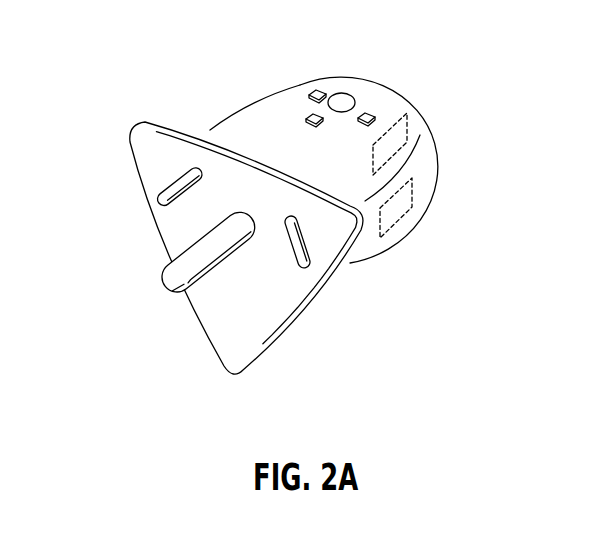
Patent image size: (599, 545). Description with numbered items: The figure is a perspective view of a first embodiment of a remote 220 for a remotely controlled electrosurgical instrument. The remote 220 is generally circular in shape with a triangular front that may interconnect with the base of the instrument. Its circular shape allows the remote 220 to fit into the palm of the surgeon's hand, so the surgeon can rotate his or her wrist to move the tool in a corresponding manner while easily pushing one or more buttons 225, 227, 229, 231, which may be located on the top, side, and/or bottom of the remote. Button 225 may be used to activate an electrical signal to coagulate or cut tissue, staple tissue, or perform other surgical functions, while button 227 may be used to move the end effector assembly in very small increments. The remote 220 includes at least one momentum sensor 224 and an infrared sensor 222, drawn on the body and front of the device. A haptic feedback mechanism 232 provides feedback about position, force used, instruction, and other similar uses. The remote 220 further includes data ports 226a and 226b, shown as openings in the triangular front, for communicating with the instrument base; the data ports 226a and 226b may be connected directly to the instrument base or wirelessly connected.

The remote 220 is at (275, 207).
The infrared sensor 222 is at (177, 282).
The momentum sensor 224 is at (402, 213).
The button 225 is at (346, 94).
The data port 226a is at (303, 248).
The data port 226b is at (161, 197).
The button 227 is at (317, 90).
The button 229 is at (372, 113).
The button 231 is at (312, 115).
The haptic feedback mechanism 232 is at (403, 130).